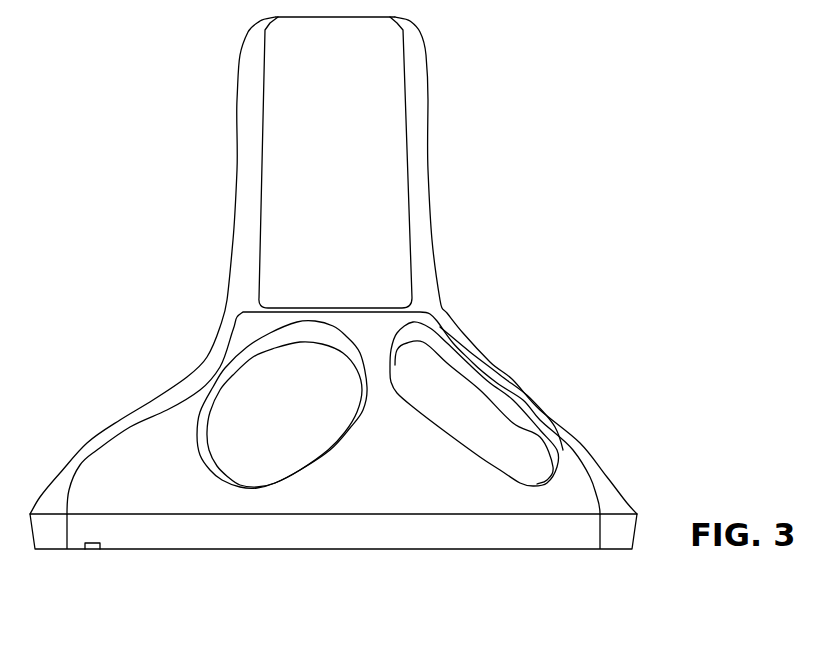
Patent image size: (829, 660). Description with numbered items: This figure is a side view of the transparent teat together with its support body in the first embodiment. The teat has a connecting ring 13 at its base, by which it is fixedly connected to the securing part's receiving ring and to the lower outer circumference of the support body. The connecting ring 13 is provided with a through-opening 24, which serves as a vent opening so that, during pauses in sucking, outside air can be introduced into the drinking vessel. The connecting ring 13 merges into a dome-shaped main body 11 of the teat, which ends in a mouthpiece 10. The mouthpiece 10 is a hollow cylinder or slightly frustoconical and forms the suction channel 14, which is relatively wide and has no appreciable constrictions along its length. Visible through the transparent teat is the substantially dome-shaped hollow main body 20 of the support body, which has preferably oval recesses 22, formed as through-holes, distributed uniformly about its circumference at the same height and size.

The mouthpiece 10 is at (365, 265).
The dome-shaped main body 11 is at (610, 483).
The connecting ring 13 is at (612, 533).
The suction channel 14 is at (346, 129).
The main body 20 is at (567, 477).
The recesses 22 is at (304, 409).
The through-opening 24 is at (92, 549).